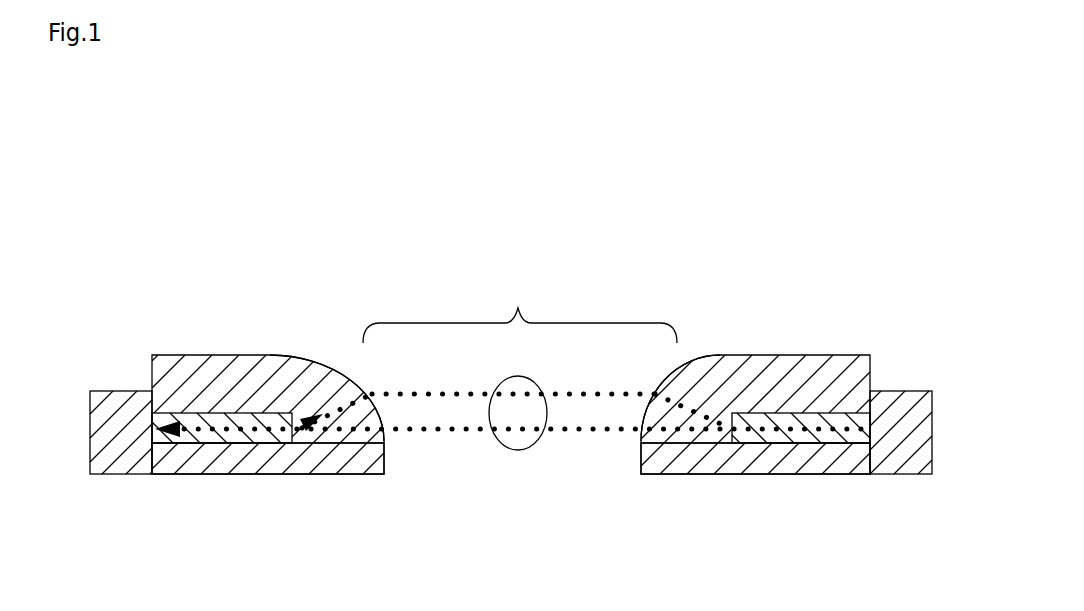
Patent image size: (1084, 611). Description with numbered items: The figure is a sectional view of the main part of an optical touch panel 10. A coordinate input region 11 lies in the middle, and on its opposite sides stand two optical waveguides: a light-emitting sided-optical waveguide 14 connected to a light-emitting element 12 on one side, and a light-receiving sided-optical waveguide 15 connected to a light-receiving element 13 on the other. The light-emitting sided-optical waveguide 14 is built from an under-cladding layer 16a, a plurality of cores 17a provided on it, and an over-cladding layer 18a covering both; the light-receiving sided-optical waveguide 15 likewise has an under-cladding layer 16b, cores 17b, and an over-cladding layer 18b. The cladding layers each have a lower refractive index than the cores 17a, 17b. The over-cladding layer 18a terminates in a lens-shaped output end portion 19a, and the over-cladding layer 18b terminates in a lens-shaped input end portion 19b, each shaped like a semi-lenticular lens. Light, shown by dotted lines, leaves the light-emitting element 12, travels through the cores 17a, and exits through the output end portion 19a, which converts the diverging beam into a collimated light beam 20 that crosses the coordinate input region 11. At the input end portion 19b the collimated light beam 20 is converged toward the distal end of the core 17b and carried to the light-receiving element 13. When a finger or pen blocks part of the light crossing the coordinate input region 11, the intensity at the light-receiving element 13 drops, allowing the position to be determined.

The optical touch panel 10 is at (538, 167).
The coordinate input region 11 is at (520, 310).
The light-emitting element 12 is at (896, 410).
The light-receiving element 13 is at (122, 402).
The light-emitting sided-optical waveguide 14 is at (642, 483).
The light-receiving sided-optical waveguide 15 is at (153, 485).
The under-cladding layer 16a is at (640, 463).
The under-cladding layer 16b is at (392, 462).
The cores 17a is at (780, 420).
The cores 17b is at (220, 420).
The over-cladding layer 18a is at (825, 375).
The over-cladding layer 18b is at (277, 364).
The output end portion 19a is at (694, 357).
The input end portion 19b is at (328, 356).
The collimated light beam 20 is at (523, 452).